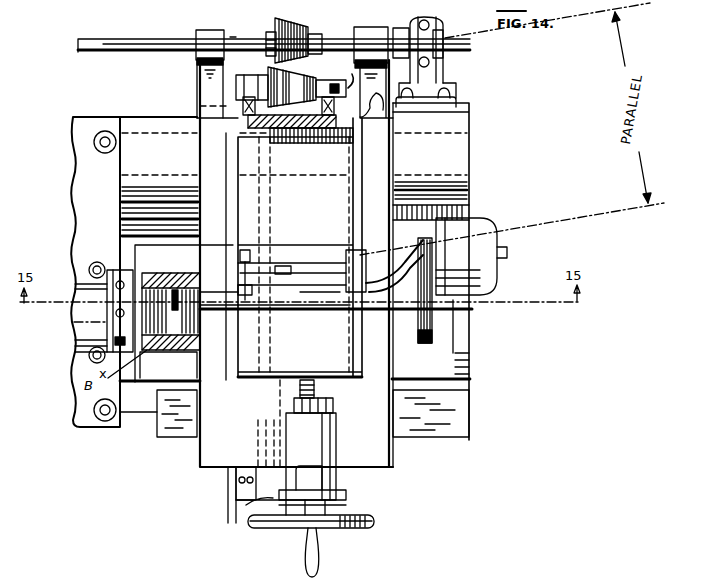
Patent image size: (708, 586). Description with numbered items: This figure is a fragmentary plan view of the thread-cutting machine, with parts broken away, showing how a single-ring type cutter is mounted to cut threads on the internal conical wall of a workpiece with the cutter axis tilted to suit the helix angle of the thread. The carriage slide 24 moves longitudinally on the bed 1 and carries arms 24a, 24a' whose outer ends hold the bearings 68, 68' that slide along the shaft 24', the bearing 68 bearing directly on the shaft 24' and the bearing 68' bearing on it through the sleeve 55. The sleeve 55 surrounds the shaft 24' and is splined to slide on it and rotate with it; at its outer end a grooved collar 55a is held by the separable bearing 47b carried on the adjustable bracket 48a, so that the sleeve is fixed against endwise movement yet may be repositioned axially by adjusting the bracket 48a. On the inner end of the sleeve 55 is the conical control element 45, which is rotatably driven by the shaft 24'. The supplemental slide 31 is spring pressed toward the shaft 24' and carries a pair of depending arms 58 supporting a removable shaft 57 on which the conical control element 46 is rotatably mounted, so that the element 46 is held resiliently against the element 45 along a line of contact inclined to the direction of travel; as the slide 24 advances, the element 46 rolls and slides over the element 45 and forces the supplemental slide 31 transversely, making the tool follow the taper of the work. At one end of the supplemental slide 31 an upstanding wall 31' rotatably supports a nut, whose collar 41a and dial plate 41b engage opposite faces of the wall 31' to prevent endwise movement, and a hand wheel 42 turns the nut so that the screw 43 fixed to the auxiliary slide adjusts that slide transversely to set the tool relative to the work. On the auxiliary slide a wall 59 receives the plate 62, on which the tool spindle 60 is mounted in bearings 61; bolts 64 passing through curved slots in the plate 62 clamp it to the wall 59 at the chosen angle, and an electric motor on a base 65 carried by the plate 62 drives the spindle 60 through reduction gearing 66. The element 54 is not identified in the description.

The bed 1 is at (470, 110).
The slide 24 is at (295, 102).
The shaft 24' is at (244, 25).
The arm 24a is at (177, 89).
The arm 24a' is at (311, 147).
The supplemental slide 31 is at (334, 137).
The upstanding wall 31' is at (297, 440).
The collar 41a is at (318, 404).
The dial plate 41b is at (346, 497).
The hand wheel 42 is at (360, 528).
The screw 43 is at (313, 389).
The control element 45 is at (300, 27).
The control element 46 is at (291, 87).
The bearing 47b is at (443, 58).
The adjustable bracket 48a is at (436, 79).
The base plate 54 is at (452, 98).
The sleeve 55 is at (274, 43).
The grooved collar 55a is at (441, 32).
The removable shaft 57 is at (346, 74).
The arms 58 is at (247, 108).
The wall 59 is at (328, 258).
The tool spindle 60 is at (195, 311).
The bearings 61 is at (290, 307).
The plate 62 is at (319, 284).
The bolts 64 is at (250, 298).
The base 65 is at (487, 295).
The reduction gearing 66 is at (394, 266).
The bearing 68 is at (197, 56).
The bearing 68' is at (405, 35).